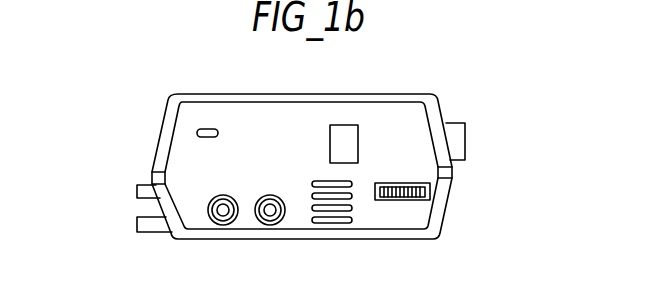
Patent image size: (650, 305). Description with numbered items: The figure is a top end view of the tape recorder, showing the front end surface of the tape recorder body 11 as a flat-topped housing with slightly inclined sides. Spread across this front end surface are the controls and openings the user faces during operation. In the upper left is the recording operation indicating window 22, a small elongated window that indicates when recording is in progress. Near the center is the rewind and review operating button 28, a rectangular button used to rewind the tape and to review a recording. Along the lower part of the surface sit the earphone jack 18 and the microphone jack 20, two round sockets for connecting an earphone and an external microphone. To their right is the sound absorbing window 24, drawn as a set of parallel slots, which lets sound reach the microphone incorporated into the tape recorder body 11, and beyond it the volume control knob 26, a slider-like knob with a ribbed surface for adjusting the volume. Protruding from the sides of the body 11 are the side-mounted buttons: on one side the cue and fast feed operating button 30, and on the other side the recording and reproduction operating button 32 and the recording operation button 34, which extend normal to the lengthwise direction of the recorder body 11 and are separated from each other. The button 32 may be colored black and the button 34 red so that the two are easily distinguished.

The tape recorder body 11 is at (433, 103).
The earphone jack 18 is at (225, 212).
The microphone jack 20 is at (270, 212).
The recording operation indicating window 22 is at (198, 132).
The sound absorbing window 24 is at (345, 222).
The volume control knob 26 is at (407, 197).
The rewind and review operating button 28 is at (343, 125).
The cue and fast feed operating button 30 is at (462, 140).
The recording and reproduction operating button 32 is at (140, 220).
The recording operation button 34 is at (142, 187).